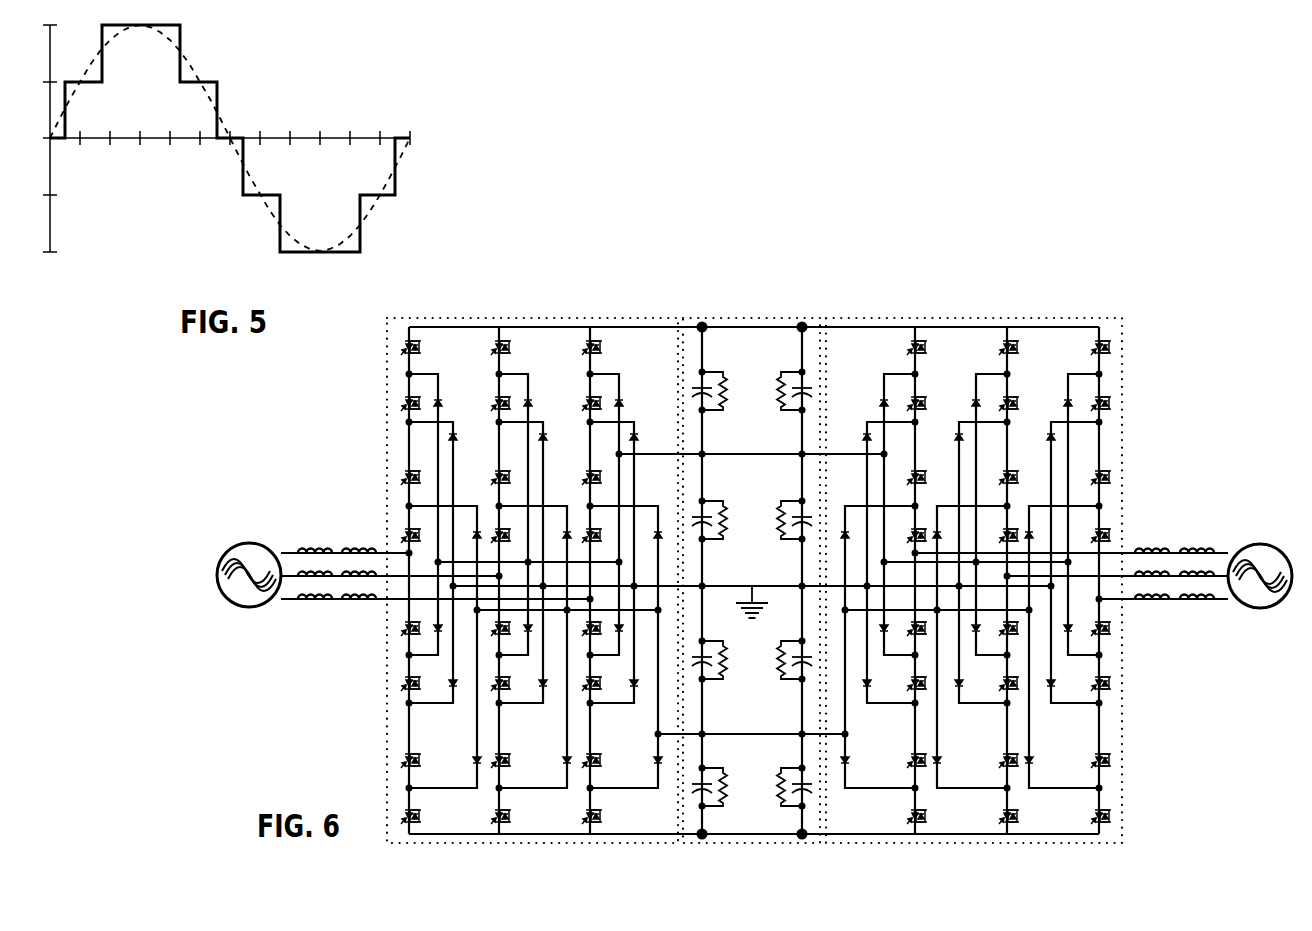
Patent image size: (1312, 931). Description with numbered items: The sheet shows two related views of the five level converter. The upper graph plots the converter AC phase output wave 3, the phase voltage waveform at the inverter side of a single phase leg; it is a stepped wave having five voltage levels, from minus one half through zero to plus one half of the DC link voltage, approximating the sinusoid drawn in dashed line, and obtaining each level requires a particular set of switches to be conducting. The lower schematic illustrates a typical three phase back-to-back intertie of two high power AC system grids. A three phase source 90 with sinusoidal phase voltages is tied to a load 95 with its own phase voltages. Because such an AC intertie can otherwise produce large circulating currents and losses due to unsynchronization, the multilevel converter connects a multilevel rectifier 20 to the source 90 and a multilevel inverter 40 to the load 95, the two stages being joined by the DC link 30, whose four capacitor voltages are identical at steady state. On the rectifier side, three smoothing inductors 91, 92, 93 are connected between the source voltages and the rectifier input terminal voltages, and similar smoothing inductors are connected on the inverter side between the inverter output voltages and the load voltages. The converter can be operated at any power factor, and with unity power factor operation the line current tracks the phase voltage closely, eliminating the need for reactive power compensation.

In FIG. 5, the converter AC phase output wave 3 is at (183, 31).
In FIG. 6, the multilevel rectifier 20 is at (543, 318).
In FIG. 6, the DC link 30 is at (755, 318).
In FIG. 6, the multilevel inverter 40 is at (965, 318).
In FIG. 6, the three phase source 90 is at (252, 544).
In FIG. 6, the smoothing inductor 91 is at (360, 548).
In FIG. 6, the smoothing inductor 92 is at (312, 578).
In FIG. 6, the smoothing inductor 93 is at (368, 603).
In FIG. 6, the load 95 is at (1260, 610).